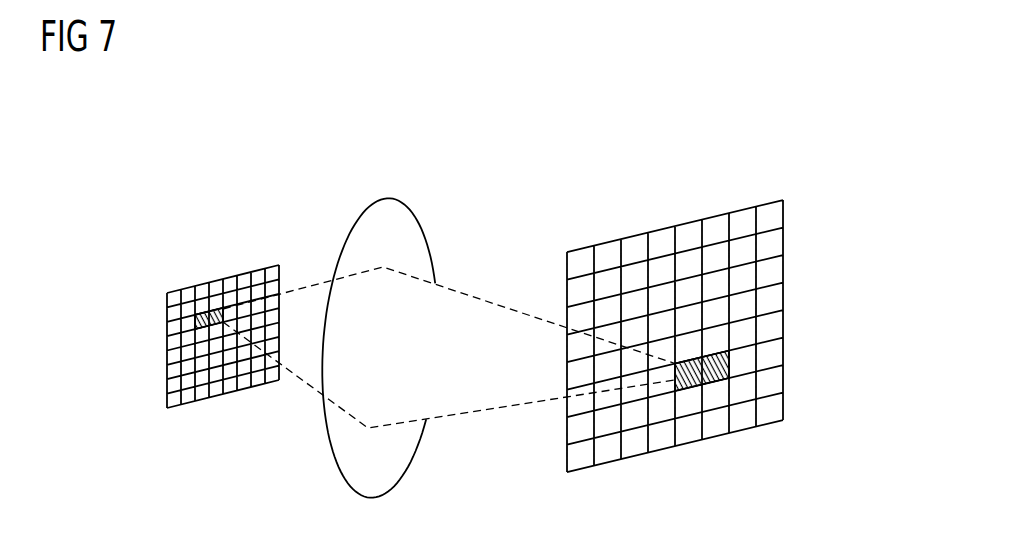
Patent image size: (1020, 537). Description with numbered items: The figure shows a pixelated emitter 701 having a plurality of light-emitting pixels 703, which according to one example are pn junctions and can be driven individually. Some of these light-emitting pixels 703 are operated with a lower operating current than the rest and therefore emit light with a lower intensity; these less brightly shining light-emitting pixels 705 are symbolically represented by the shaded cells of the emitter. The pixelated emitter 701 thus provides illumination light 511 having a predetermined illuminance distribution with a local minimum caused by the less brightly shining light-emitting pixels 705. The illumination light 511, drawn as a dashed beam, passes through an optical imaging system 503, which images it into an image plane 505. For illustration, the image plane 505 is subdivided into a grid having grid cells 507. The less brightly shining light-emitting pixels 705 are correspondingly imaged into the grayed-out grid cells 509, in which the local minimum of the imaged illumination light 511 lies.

The optical imaging system 503 is at (392, 198).
The image plane 505 is at (783, 250).
The grid cells 507 is at (783, 205).
The grayed-out grid cells 509 is at (729, 370).
The illumination light 511 is at (297, 380).
The pixelated emitter 701 is at (214, 397).
The light-emitting pixels 703 is at (167, 328).
The less brightly shining light-emitting pixels 705 is at (213, 310).